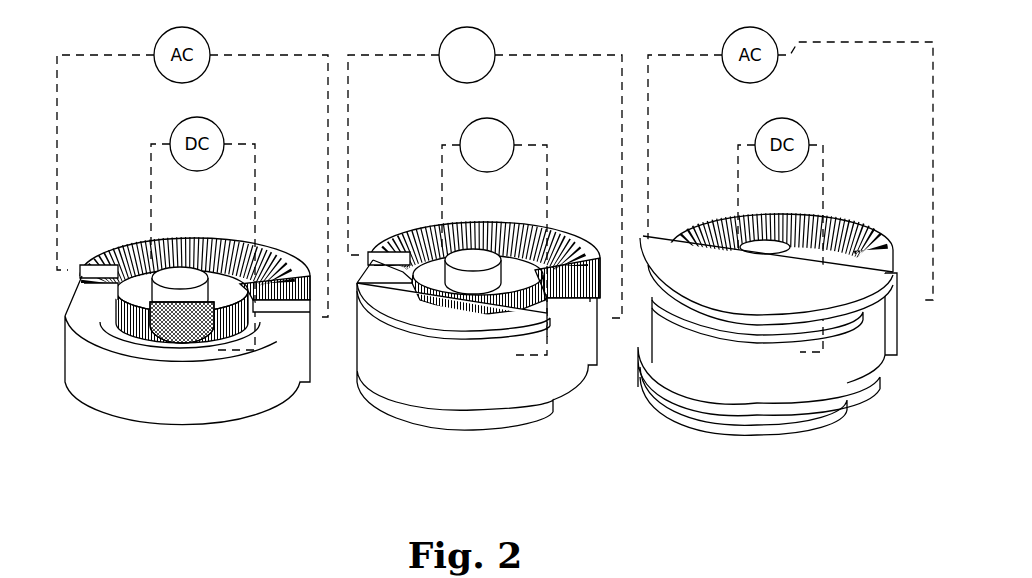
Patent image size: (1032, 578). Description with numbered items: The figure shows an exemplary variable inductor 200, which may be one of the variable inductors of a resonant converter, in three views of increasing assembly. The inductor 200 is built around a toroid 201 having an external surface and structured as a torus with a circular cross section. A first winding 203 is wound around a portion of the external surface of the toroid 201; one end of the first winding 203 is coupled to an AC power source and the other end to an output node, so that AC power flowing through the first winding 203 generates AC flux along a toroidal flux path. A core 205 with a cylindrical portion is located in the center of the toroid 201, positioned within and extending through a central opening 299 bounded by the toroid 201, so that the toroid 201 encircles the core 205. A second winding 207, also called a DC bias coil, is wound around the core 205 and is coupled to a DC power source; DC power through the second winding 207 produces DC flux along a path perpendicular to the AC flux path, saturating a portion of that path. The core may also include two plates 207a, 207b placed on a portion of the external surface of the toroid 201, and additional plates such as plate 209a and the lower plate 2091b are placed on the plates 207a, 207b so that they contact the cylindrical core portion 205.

The variable inductor 200 is at (372, 461).
The toroid 201 is at (287, 384).
The first winding 203 is at (118, 252).
The core 205 is at (183, 270).
The second winding 207 is at (258, 260).
The plate 207a is at (478, 341).
The plate 207b is at (478, 421).
The additional plate 209a is at (862, 302).
The lower ring 2091b is at (860, 413).
The central opening 299 is at (114, 298).